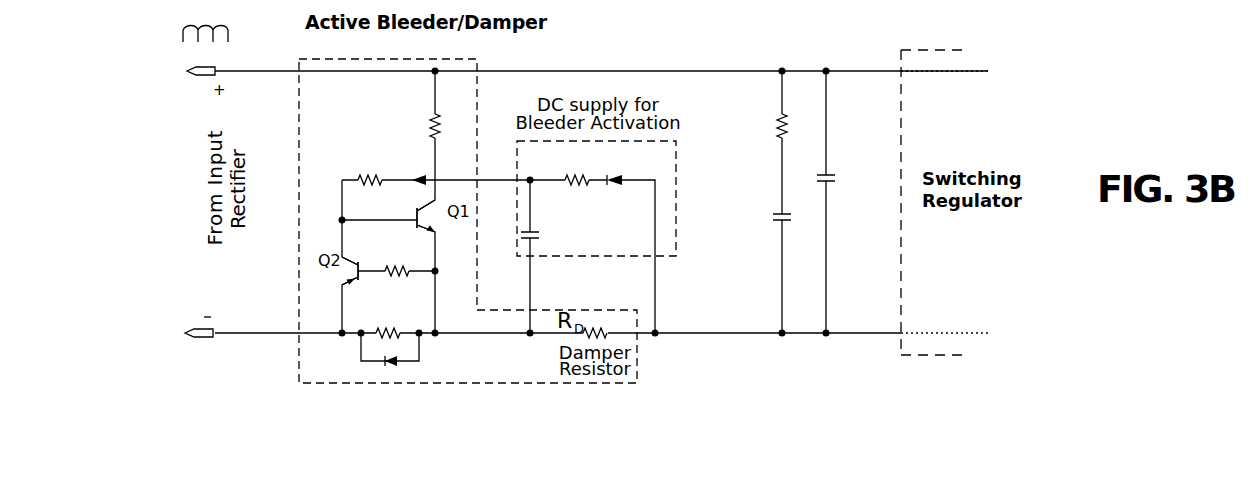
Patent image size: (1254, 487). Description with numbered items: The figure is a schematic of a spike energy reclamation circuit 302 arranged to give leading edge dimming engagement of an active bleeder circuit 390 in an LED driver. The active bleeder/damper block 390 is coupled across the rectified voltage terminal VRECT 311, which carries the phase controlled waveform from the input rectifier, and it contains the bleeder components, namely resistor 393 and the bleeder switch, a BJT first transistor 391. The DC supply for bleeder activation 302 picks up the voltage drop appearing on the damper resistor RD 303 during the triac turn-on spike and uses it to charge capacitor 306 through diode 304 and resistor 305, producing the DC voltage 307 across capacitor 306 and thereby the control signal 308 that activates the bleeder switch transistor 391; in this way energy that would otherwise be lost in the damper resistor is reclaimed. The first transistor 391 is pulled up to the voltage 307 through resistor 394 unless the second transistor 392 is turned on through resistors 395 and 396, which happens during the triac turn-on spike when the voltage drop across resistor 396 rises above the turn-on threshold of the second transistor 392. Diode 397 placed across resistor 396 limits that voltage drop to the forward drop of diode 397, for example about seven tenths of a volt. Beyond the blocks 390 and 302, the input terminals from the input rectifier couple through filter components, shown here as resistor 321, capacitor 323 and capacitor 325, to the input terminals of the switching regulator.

The rectified voltage terminal VRECT 311 is at (225, 56).
The active bleeder circuit 390 is at (346, 52).
The resistor 393 is at (457, 116).
The resistor 394 is at (382, 164).
The control signal 308 is at (458, 169).
The DC voltage 307 is at (494, 190).
The spike energy reclamation circuit 302 is at (676, 178).
The resistor 305 is at (582, 176).
The diode 304 is at (623, 174).
The capacitor 306 is at (541, 237).
The damper resistor RD 303 is at (607, 328).
The resistor 321 is at (770, 139).
The capacitor 323 is at (771, 205).
The capacitor 325 is at (836, 181).
The transistor Q1 391 is at (451, 218).
The transistor Q2 392 is at (337, 273).
The resistor 395 is at (404, 252).
The resistor 396 is at (398, 319).
The diode 397 is at (400, 364).